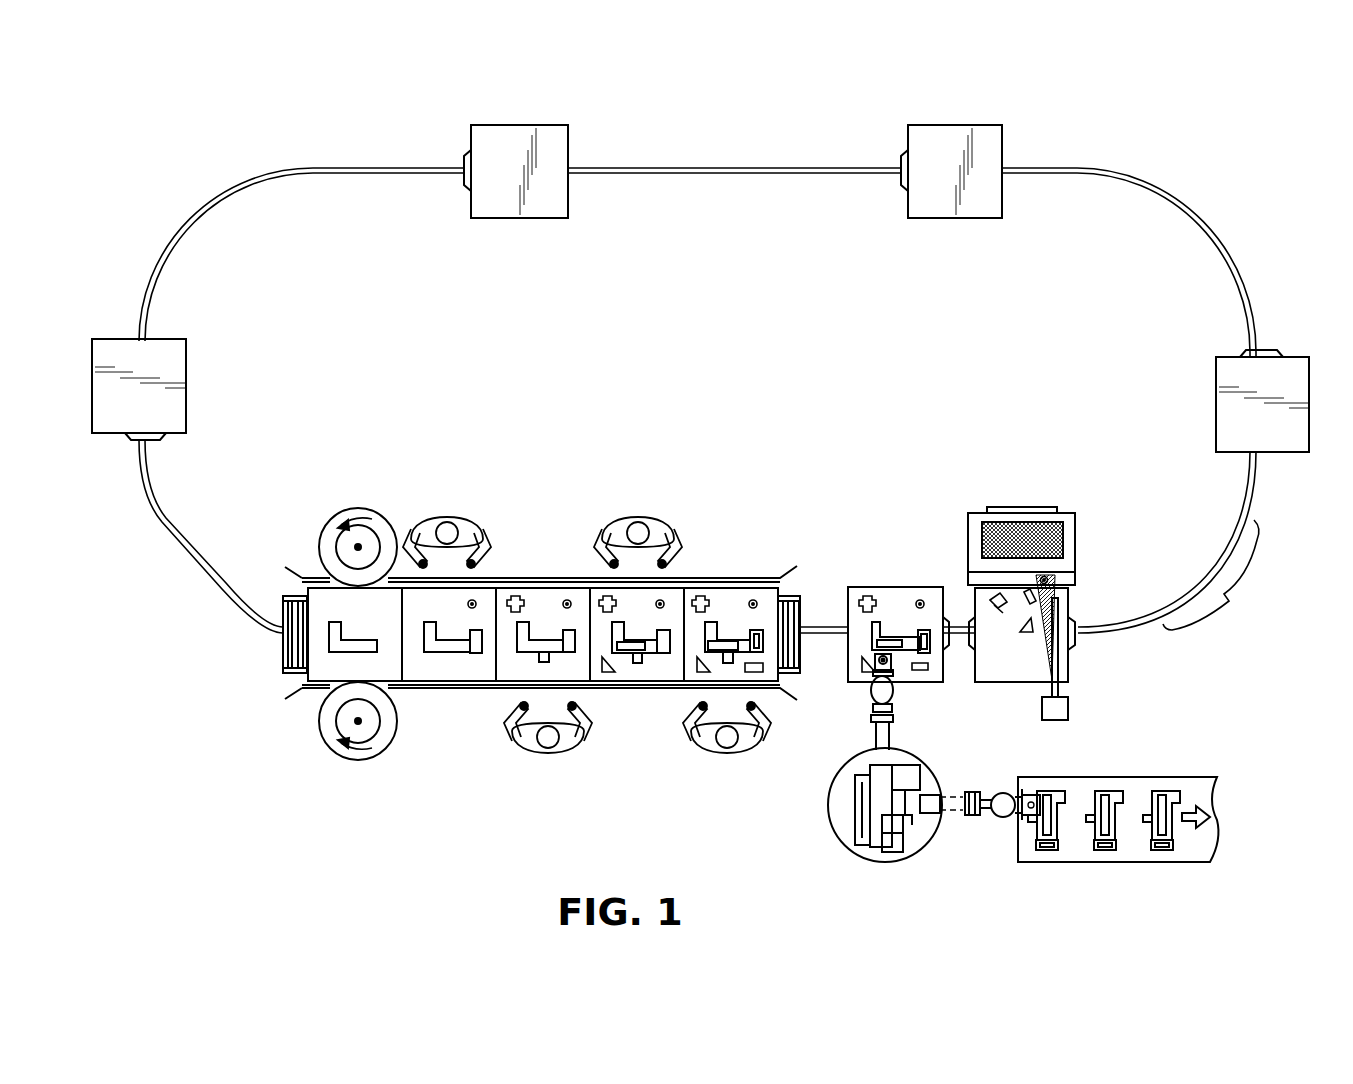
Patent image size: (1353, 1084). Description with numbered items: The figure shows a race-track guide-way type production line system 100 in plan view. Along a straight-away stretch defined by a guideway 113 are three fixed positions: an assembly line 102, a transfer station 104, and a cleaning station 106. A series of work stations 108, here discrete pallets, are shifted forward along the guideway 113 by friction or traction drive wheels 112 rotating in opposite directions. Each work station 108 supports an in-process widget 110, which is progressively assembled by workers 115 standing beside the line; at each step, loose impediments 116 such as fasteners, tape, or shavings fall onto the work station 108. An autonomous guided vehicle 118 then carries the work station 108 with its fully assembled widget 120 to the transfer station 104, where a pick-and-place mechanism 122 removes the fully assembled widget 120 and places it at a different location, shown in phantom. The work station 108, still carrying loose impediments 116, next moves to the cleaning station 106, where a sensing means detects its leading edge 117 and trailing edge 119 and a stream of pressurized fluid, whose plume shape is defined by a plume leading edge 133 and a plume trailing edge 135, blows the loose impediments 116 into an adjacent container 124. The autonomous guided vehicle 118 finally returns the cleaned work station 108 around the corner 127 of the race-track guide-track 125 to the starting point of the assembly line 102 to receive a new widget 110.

The production line system 100 is at (1196, 163).
The assembly line 102 is at (530, 445).
The transfer station 104 is at (905, 445).
The cleaning station 106 is at (1026, 445).
The work station 108 is at (745, 616).
The widget 110 is at (447, 653).
The friction or traction drive wheels 112 is at (358, 508).
The guideway 113 is at (413, 690).
The worker 115 is at (712, 750).
The loose impediments 116 is at (1033, 630).
The leading edge 117 is at (1068, 665).
The autonomous guided vehicle 118 is at (1076, 632).
The trailing edge 119 is at (975, 668).
The fully assembled widget 120 is at (1113, 791).
The pick-and-place mechanism 122 is at (838, 820).
The container 124 is at (1076, 520).
The guide-track 125 is at (1222, 247).
The corner 127 is at (1216, 575).
The plume leading edge 133 is at (1060, 593).
The plume trailing edge 135 is at (1031, 634).